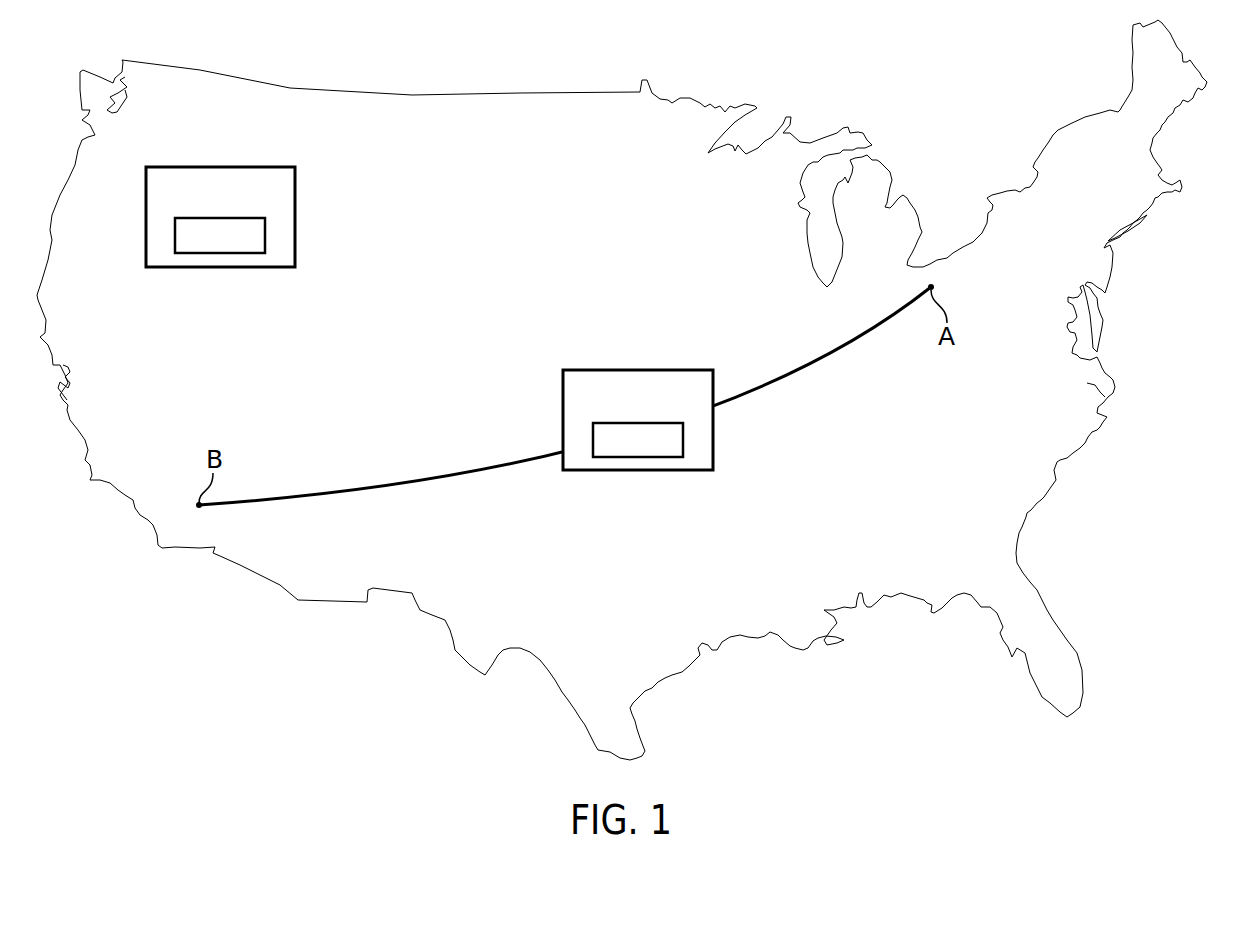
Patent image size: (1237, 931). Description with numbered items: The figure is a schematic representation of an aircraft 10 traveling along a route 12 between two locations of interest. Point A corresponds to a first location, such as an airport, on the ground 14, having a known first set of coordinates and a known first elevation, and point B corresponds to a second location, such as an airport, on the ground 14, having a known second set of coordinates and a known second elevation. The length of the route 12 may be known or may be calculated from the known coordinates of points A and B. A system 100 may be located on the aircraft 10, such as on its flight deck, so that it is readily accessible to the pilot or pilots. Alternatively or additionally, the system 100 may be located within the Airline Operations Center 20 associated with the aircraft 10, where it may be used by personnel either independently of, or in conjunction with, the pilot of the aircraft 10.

The aircraft 10 is at (657, 370).
The route 12 is at (829, 356).
The ground 14 is at (1137, 159).
The Airline Operations Center 20 is at (240, 167).
The system 100 is at (228, 253).